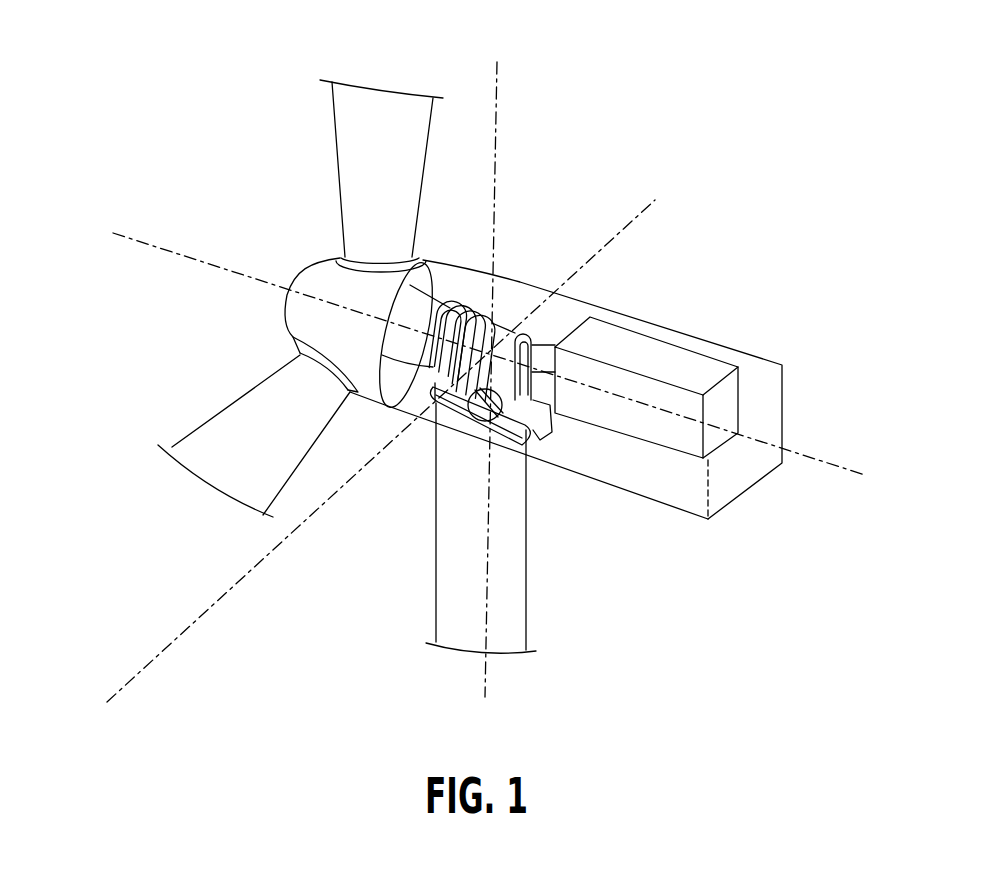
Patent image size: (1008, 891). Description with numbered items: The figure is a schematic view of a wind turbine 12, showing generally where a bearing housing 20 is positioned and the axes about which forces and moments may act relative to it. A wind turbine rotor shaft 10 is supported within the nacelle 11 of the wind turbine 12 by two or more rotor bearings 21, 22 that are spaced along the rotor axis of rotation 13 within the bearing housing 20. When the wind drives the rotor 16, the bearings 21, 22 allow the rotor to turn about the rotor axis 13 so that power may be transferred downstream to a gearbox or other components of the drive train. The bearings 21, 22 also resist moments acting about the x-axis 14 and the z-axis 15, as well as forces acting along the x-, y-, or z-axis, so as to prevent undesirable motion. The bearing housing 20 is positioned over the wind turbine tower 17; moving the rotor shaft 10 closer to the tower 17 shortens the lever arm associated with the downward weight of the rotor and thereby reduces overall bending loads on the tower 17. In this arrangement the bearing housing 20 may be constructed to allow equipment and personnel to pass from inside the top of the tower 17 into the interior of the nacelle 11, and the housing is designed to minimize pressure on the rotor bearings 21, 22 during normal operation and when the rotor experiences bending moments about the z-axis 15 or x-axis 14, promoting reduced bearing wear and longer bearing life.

The rotor shaft 10 is at (393, 338).
The nacelle 11 is at (673, 330).
The wind turbine 12 is at (629, 76).
The rotor axis of rotation 13 is at (141, 238).
The x-axis 14 is at (653, 201).
The z-axis 15 is at (497, 62).
The rotor 16 is at (318, 282).
The wind turbine tower 17 is at (512, 622).
The bearing housing 20 is at (492, 305).
The rotor bearing 21 is at (452, 298).
The rotor bearing 22 is at (530, 337).